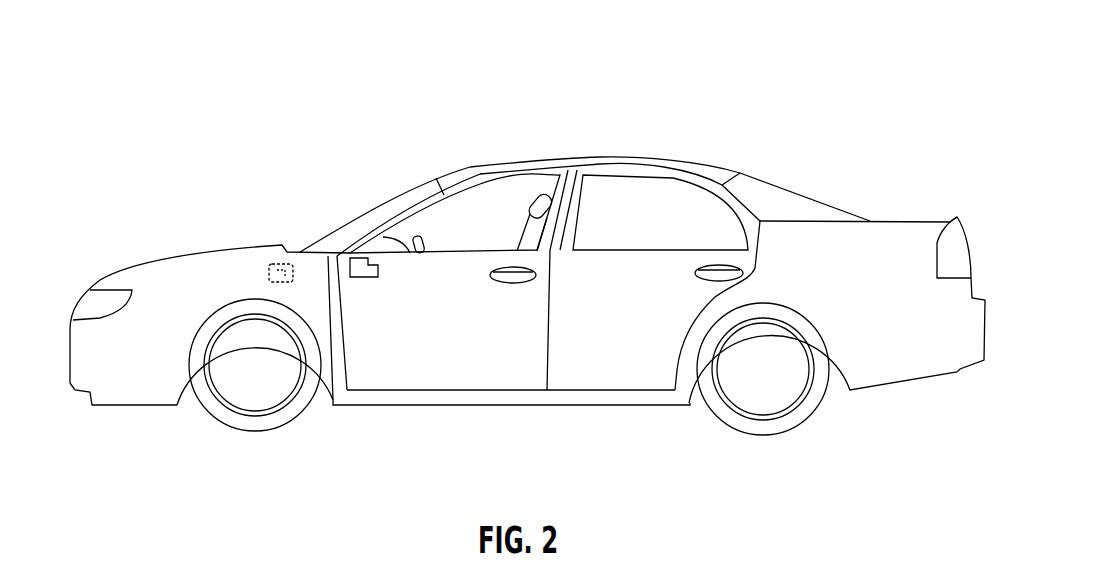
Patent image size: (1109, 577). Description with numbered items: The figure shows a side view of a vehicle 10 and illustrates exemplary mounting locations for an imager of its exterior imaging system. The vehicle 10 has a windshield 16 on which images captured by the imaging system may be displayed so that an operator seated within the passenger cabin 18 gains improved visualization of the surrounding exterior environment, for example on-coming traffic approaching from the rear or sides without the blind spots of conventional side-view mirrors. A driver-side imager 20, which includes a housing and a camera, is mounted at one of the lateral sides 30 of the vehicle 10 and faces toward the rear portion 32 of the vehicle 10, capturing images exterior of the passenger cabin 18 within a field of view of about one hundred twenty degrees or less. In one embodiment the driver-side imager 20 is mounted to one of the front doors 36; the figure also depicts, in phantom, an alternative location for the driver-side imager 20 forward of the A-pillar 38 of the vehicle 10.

The vehicle 10 is at (527, 229).
The windshield 16 is at (358, 225).
The passenger cabin 18 is at (490, 206).
The driver-side imager 20 is at (252, 272).
The lateral sides 30 is at (606, 355).
The rear portion 32 is at (904, 256).
The front doors 36 is at (443, 362).
The A-pillar 38 is at (410, 207).